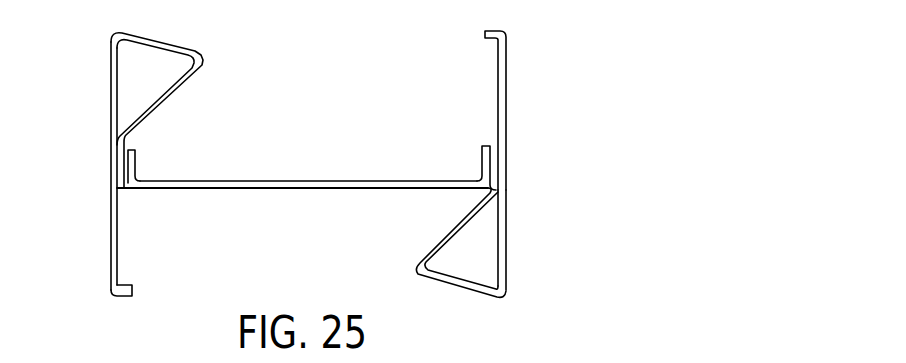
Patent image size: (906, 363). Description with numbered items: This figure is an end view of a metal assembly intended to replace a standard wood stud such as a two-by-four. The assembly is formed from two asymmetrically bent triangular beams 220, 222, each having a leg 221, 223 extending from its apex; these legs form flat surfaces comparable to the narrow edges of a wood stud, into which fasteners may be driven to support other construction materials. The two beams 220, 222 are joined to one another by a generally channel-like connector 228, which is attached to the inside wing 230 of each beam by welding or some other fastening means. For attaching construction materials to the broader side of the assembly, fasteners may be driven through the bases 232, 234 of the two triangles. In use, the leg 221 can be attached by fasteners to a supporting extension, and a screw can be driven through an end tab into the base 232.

The asymmetrically bent triangular beam 220 is at (110, 96).
The leg 221 is at (112, 227).
The asymmetrically bent triangular beam 222 is at (510, 230).
The leg 223 is at (507, 71).
The channel-like connector 228 is at (303, 180).
The inside wing 230 is at (131, 159).
The base 232 is at (168, 42).
The base 234 is at (447, 283).